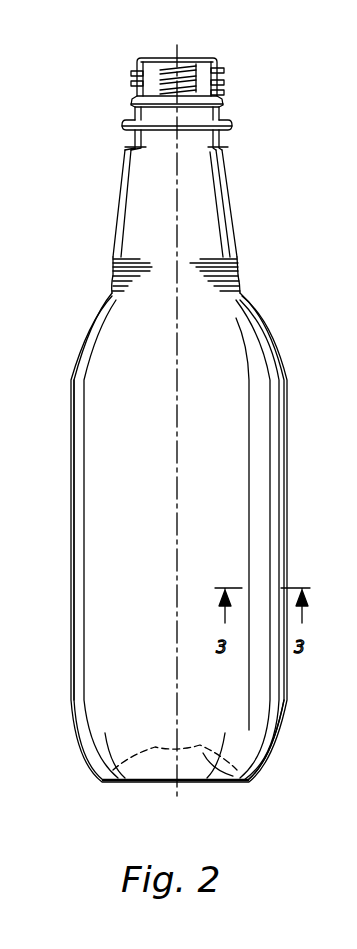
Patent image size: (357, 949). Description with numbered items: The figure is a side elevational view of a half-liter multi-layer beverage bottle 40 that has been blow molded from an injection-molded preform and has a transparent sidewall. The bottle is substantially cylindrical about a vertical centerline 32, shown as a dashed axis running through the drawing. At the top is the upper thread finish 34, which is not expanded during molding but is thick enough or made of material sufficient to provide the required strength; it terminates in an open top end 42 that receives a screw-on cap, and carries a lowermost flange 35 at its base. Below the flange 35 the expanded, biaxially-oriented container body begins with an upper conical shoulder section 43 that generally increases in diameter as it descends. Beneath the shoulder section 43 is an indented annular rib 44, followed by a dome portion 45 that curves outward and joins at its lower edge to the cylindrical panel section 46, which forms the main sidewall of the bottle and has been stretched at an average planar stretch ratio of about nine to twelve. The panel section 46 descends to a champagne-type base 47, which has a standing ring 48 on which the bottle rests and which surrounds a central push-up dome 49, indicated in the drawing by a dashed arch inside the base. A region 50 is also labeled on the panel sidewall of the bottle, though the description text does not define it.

The vertical centerline 32 is at (173, 786).
The upper neck portion or finish 34 is at (224, 80).
The flange 35 is at (229, 127).
The multi-layer beverage bottle 40 is at (272, 312).
The open top end 42 is at (188, 58).
The upper conical shoulder section 43 is at (236, 202).
The indented annular rib 44 is at (240, 280).
The dome portion 45 is at (281, 343).
The cylindrical panel section 46 is at (287, 441).
The champagne-type base 47 is at (278, 761).
The standing ring 48 is at (243, 784).
The central push-up dome 49 is at (208, 784).
The label panel 50 is at (73, 476).